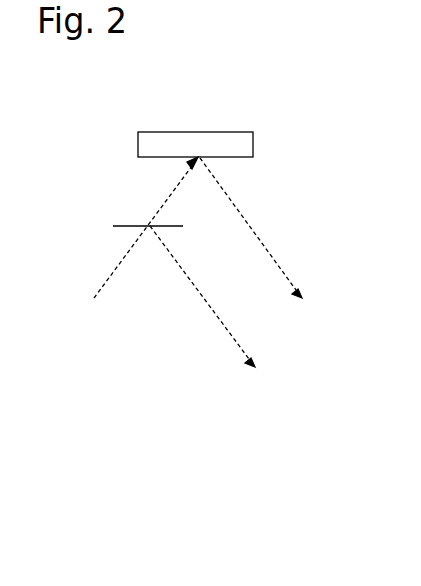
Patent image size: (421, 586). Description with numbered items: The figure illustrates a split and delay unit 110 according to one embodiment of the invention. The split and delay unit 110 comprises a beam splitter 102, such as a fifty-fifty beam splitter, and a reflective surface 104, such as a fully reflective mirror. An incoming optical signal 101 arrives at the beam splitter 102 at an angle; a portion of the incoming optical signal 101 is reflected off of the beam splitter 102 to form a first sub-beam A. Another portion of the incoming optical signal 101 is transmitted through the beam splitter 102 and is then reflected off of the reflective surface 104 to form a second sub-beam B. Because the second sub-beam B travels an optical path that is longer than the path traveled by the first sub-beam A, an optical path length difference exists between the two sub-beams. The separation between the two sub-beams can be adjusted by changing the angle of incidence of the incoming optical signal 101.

The split and delay unit 110 is at (267, 91).
The reflective surface 104 is at (253, 152).
The beam splitter 102 is at (183, 226).
The incoming optical signal 101 is at (103, 288).
The first sub-beam A is at (202, 304).
The second sub-beam B is at (259, 228).